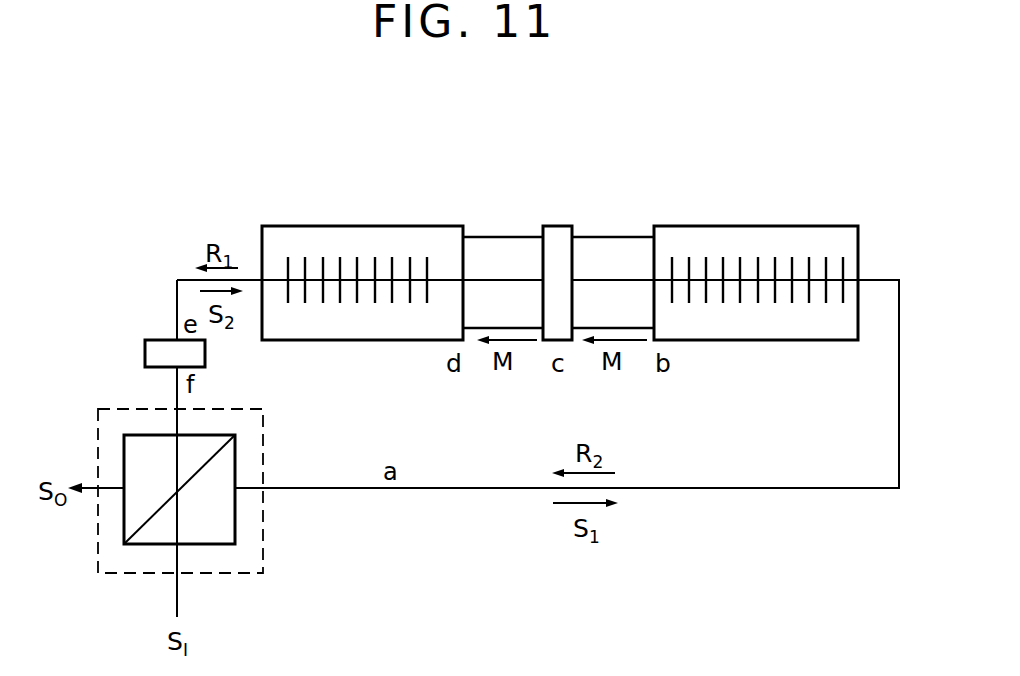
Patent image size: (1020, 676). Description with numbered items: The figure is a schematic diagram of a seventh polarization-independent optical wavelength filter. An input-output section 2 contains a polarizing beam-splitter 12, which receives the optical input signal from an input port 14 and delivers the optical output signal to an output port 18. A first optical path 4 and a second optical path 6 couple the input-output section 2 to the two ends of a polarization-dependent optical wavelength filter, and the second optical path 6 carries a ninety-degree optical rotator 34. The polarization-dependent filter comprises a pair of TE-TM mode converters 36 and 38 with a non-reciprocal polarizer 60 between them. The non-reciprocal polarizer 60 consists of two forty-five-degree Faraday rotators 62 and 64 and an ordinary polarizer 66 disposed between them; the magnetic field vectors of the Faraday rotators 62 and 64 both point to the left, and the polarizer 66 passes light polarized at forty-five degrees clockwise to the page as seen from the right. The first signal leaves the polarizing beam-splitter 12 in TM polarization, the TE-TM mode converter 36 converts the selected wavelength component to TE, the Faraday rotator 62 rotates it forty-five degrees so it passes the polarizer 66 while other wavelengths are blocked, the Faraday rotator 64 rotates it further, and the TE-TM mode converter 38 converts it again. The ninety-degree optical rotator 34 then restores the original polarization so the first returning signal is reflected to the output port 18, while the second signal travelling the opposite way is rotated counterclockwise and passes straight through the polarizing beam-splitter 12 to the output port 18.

The input-output section 2 is at (265, 542).
The first optical path 4 is at (902, 307).
The second optical path 6 is at (177, 303).
The polarizing beam-splitter 12 is at (237, 452).
The input port 14 is at (180, 600).
The output port 18 is at (92, 485).
The ninety-degree optical rotator 34 is at (145, 352).
The TE-TM mode converter 36 is at (792, 225).
The TE-TM mode converter 38 is at (347, 225).
The non-reciprocal polarizer 60 is at (553, 217).
The forty-five-degree Faraday rotator 62 is at (613, 242).
The forty-five-degree Faraday rotator 64 is at (490, 236).
The polarizer 66 is at (557, 225).